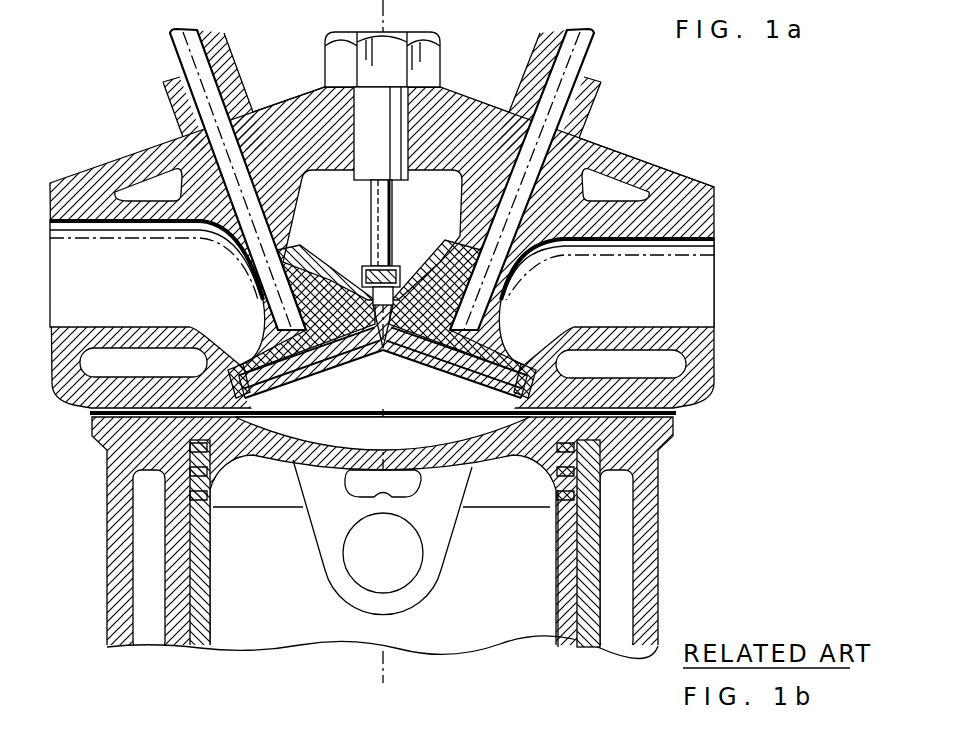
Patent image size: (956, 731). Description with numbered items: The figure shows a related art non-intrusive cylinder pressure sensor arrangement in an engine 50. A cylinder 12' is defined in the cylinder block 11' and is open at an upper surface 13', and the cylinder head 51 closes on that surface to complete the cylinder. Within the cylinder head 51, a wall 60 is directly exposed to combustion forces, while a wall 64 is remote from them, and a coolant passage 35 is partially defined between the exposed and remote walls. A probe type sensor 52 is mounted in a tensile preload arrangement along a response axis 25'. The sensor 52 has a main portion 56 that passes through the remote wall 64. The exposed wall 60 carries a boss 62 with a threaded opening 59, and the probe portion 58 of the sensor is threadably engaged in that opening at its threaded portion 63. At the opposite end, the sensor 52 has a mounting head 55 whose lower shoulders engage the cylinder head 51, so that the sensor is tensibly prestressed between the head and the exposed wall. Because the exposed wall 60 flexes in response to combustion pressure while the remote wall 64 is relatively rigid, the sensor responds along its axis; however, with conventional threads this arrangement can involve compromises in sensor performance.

The probe type sensor 52 is at (383, 90).
The mounting head 55 is at (420, 40).
The main portion 56 is at (400, 125).
The remote wall 64 is at (256, 100).
The coolant passage 35 is at (337, 173).
The probe portion 58 is at (377, 193).
The boss 62 is at (397, 260).
The threaded portion 63 is at (373, 253).
The threaded opening 59 is at (362, 294).
The wall 60 is at (383, 358).
The engine 50 is at (636, 145).
The cylinder head 51 is at (693, 173).
The upper surface 13' is at (420, 441).
The cylinder block 11' is at (411, 538).
The response axis 25' is at (381, 548).
The cylinder 12' is at (551, 569).